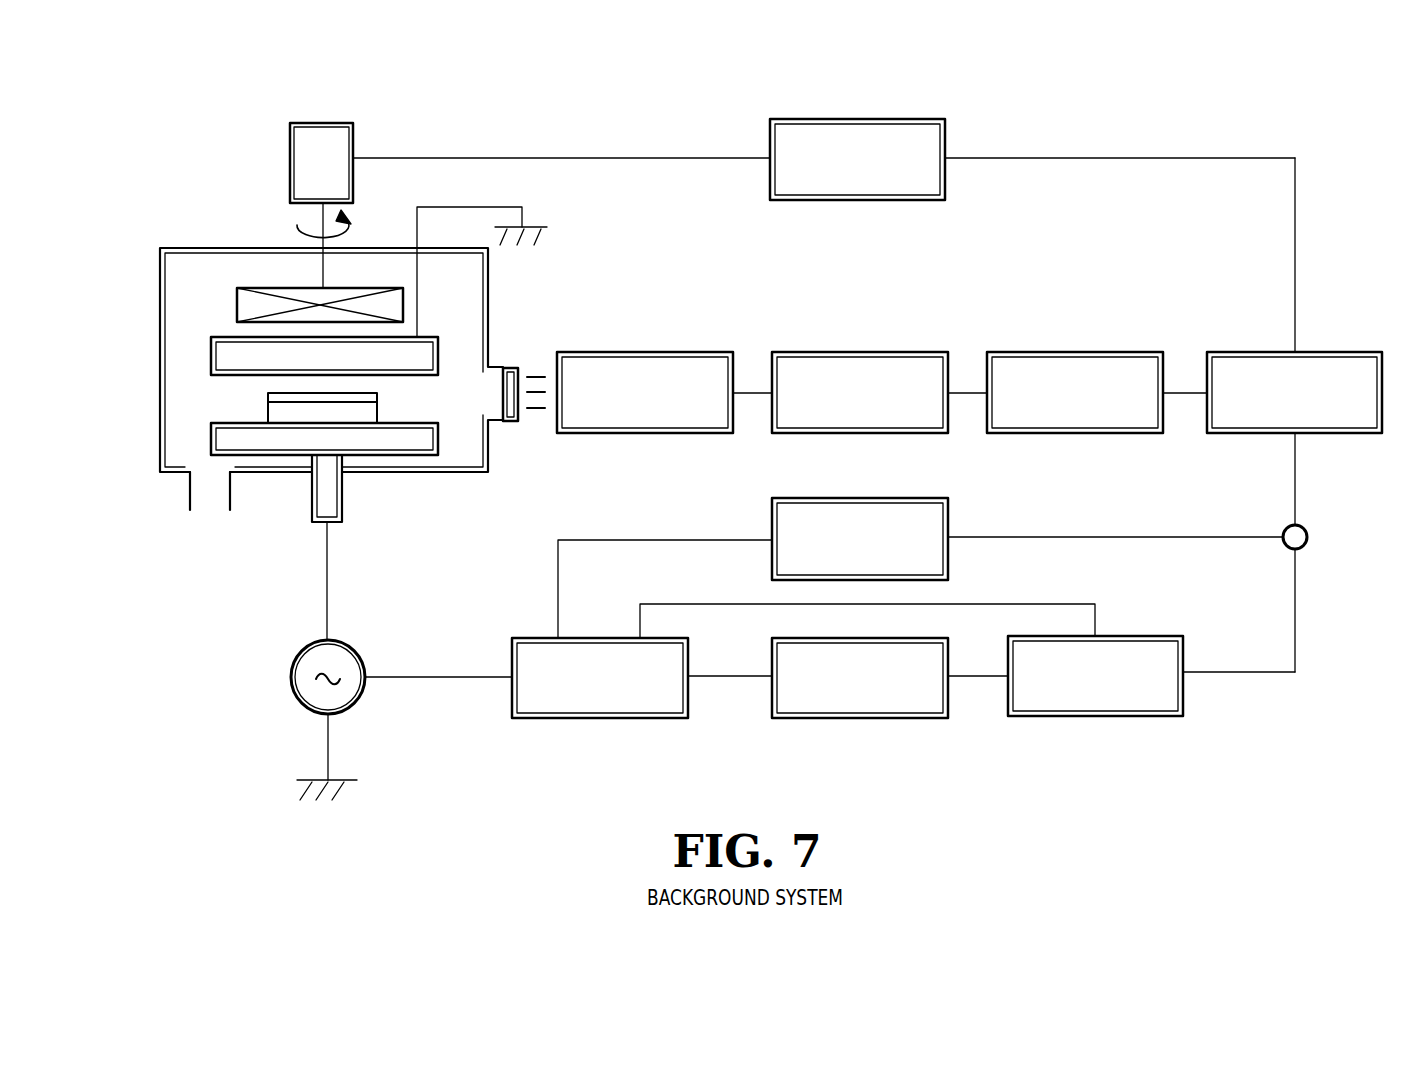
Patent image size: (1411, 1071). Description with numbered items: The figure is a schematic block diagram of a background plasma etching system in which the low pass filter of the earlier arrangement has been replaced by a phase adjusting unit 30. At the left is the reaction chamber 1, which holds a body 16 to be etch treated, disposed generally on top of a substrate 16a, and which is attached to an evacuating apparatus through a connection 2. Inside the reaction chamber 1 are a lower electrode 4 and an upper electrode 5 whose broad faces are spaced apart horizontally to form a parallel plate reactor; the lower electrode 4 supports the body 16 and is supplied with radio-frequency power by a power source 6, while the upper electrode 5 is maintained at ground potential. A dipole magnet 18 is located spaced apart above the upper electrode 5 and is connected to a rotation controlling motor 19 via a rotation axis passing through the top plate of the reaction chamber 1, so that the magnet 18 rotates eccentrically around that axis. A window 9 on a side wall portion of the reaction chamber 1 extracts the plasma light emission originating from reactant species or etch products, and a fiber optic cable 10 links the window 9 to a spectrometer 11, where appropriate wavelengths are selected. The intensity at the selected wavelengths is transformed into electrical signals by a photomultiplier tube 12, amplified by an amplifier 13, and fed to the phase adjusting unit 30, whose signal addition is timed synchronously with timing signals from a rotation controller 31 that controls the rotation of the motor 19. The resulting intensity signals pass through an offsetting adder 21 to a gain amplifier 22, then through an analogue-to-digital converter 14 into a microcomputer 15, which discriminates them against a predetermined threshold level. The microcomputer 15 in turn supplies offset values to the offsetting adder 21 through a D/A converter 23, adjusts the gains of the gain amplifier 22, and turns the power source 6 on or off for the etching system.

The reaction chamber 1 is at (492, 273).
The connection 2 is at (210, 498).
The lower electrode 4 is at (438, 443).
The upper electrode 5 is at (438, 348).
The power source 6 is at (300, 650).
The window 9 is at (518, 417).
The fiber optic cable 10 is at (535, 375).
The spectrometer 11 is at (700, 352).
The photomultiplier tube 12 is at (900, 352).
The amplifier 13 is at (1122, 352).
The analogue-to-digital (A/D) converter 14 is at (865, 638).
The microcomputer 15 is at (595, 638).
The body 16 is at (268, 398).
The substrate 16a is at (377, 408).
The dipole magnet 18 is at (237, 292).
The rotation controlling motor 19 is at (290, 150).
The offsetting adder 21 is at (1305, 547).
The gain amplifier 22 is at (1147, 636).
The D/A converter 23 is at (912, 498).
The phase adjusting unit 30 is at (1347, 352).
The rotation controller 31 is at (898, 119).